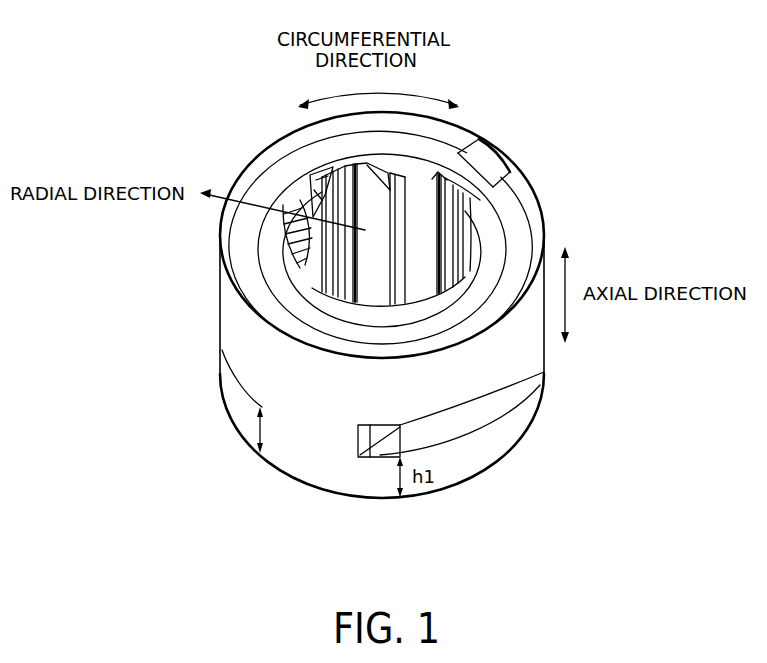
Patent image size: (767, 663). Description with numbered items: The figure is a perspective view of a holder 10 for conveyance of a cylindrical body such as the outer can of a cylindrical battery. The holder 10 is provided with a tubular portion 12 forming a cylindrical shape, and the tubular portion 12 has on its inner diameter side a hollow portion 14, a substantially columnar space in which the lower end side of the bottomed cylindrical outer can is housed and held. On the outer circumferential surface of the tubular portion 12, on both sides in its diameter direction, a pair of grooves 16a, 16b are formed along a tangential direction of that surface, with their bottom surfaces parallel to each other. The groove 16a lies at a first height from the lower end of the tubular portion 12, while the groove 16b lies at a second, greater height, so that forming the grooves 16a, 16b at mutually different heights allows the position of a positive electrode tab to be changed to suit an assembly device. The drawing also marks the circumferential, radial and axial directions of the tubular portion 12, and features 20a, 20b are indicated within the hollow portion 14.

The holder for conveyance 10 is at (483, 70).
The tubular portion 12 is at (262, 150).
The hollow portion 14 is at (418, 240).
The groove 16a is at (353, 458).
The groove 16b is at (221, 329).
The engaging protrusion 20a is at (314, 243).
The engaging protrusion 20b is at (312, 175).